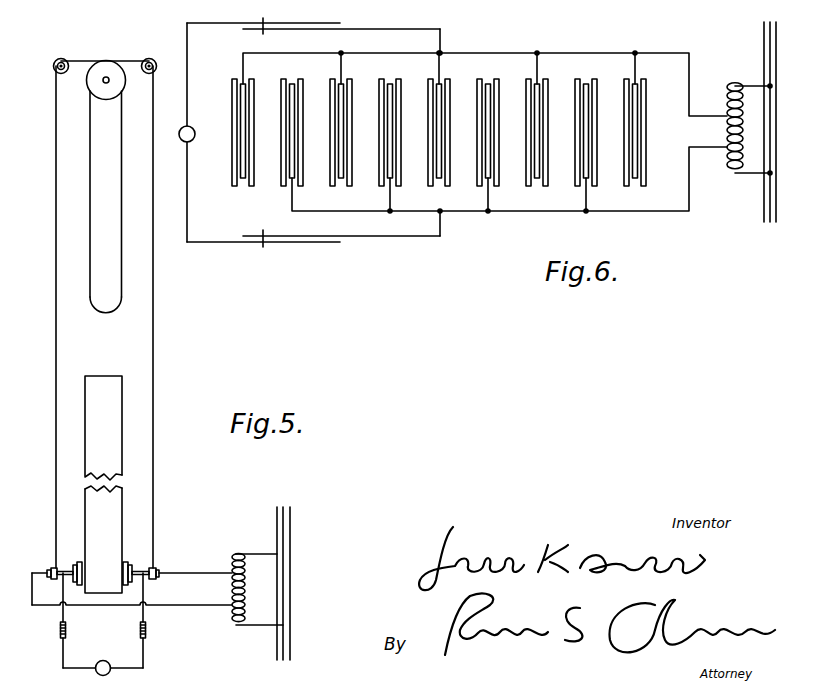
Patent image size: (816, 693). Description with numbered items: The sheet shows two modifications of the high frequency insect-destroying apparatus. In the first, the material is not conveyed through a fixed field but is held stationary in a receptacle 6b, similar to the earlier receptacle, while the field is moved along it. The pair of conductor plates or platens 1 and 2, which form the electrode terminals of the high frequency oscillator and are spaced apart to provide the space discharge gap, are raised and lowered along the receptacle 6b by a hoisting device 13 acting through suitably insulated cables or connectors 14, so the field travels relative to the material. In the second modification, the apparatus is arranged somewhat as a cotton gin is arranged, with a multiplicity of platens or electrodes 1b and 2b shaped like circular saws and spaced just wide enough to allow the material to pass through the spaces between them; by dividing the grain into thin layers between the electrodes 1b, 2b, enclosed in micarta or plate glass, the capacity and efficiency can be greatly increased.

In FIG. 5, the hoisting device 13 is at (104, 62).
In FIG. 5, the insulated cables or connectors 14 is at (56, 222).
In FIG. 5, the receptacle 6b is at (110, 396).
In FIG. 5, the conductor plate or platen 1 is at (75, 562).
In FIG. 5, the conductor plate or platen 2 is at (126, 562).
In FIG. 6, the platen or electrode 1b is at (353, 87).
In FIG. 6, the platen or electrode 2b is at (622, 222).